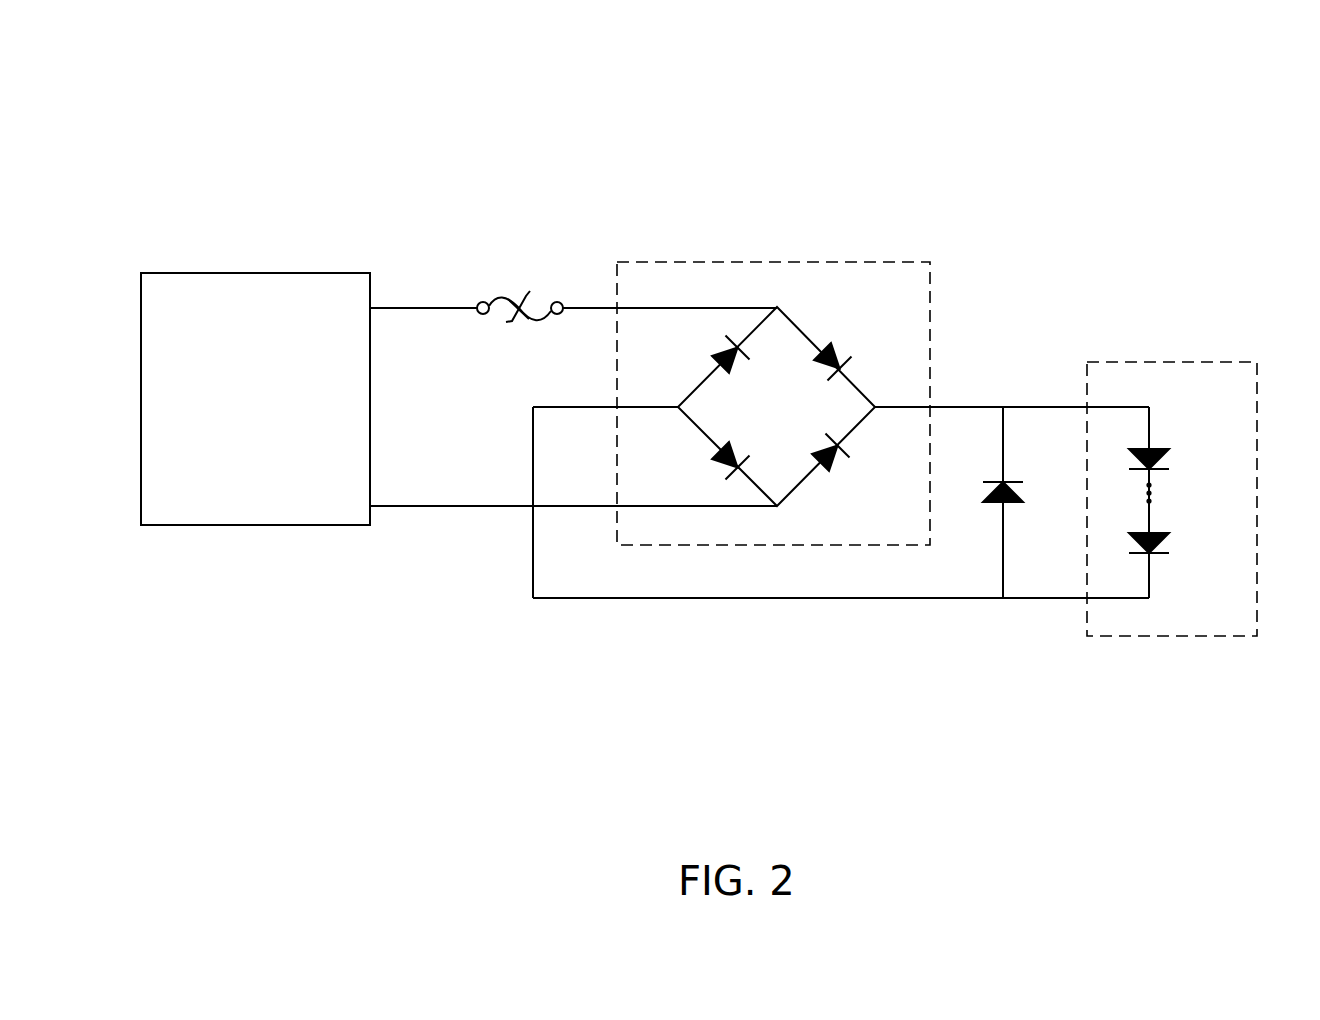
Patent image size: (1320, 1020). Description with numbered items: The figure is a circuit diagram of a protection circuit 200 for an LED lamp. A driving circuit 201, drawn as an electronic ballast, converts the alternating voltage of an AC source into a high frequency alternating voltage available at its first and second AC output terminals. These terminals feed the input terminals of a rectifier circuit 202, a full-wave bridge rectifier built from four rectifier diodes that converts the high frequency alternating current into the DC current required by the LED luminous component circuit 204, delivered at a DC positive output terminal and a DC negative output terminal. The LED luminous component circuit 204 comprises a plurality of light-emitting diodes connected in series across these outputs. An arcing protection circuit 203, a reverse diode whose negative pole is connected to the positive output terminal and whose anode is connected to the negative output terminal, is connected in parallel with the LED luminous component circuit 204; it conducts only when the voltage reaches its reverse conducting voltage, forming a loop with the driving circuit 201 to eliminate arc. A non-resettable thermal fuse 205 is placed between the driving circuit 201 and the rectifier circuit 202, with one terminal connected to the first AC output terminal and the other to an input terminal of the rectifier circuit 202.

The protection circuit 200 is at (392, 90).
The driving circuit 201 is at (276, 273).
The rectifier circuit 202 is at (782, 262).
The arcing protection circuit 203 is at (1013, 481).
The LED luminous component circuit 204 is at (1142, 362).
The non-resettable thermal fuse 205 is at (536, 288).